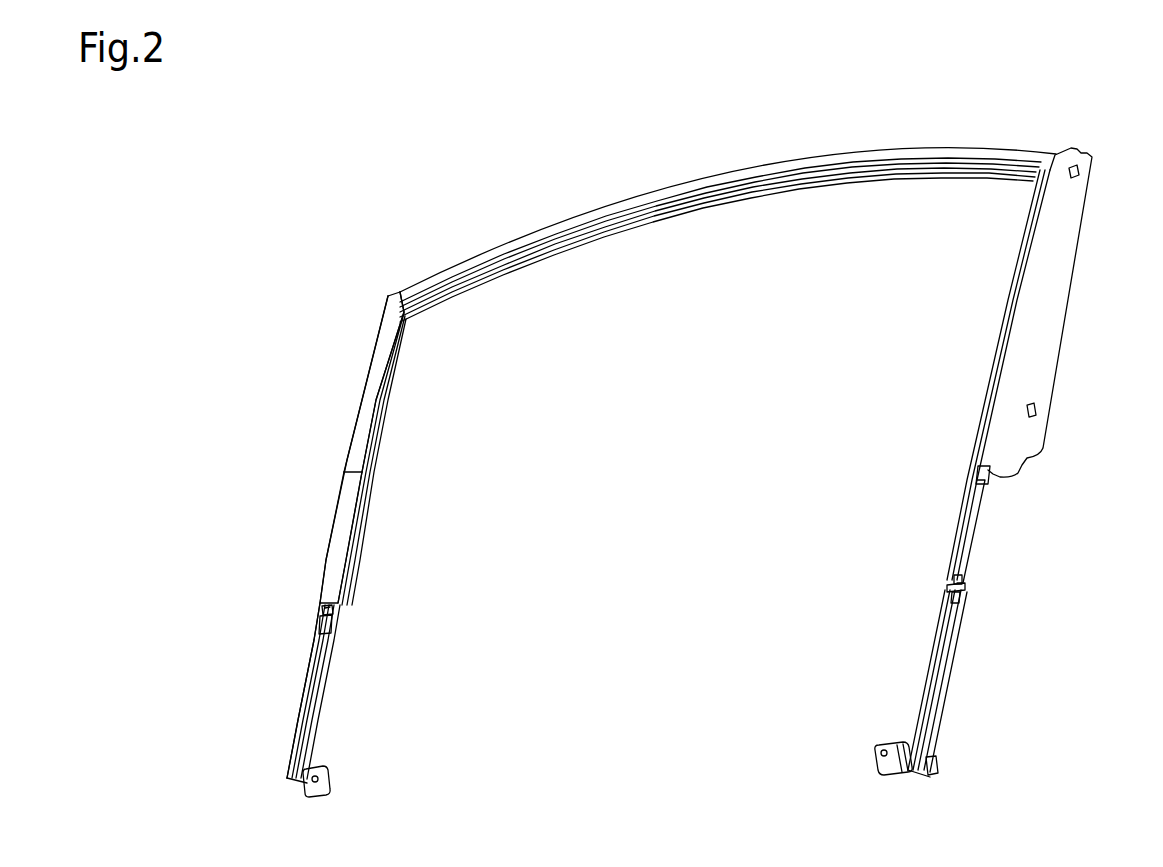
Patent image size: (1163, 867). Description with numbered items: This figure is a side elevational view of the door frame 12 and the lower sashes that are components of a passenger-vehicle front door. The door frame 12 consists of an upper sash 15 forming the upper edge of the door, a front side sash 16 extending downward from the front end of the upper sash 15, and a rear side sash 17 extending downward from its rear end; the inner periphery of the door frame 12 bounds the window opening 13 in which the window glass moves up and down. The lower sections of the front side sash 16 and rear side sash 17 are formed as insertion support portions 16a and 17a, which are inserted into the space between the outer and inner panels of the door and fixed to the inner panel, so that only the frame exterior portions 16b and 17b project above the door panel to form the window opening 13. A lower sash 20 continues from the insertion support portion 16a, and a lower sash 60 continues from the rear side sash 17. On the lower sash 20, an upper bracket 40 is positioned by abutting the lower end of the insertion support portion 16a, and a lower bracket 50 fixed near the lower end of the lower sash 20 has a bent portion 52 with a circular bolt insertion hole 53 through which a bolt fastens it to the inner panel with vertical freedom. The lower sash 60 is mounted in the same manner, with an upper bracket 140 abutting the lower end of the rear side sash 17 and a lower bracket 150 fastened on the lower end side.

The door frame 12 is at (1100, 159).
The window opening 13 is at (562, 256).
The upper sash 15 is at (740, 173).
The front side sash 16 is at (300, 535).
The insertion support portion 16a is at (338, 568).
The frame exterior portion 16b is at (363, 416).
The rear side sash 17 is at (1053, 365).
The insertion support portion 17a is at (969, 551).
The frame exterior portion 17b is at (1040, 379).
The lower sash 20 is at (313, 679).
The upper bracket 40 is at (323, 629).
The lower bracket 50 is at (321, 787).
The bent portion 52 is at (316, 781).
The bolt insertion hole 53 is at (318, 776).
The lower sash 60 is at (941, 698).
The upper bracket 140 is at (961, 592).
The lower bracket 150 is at (884, 762).